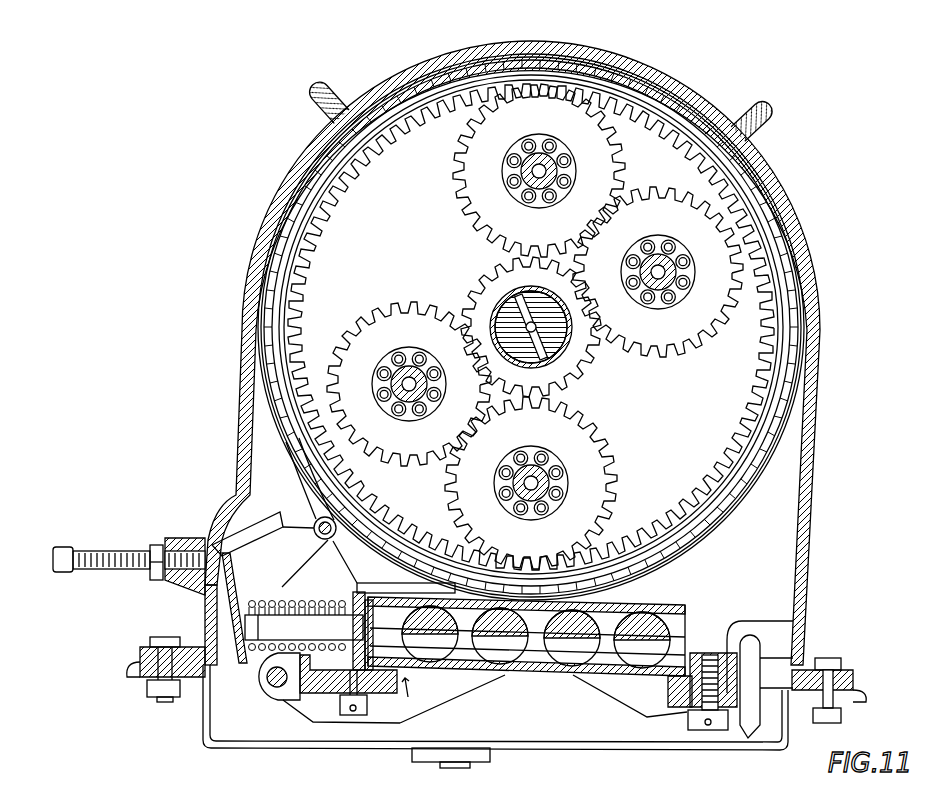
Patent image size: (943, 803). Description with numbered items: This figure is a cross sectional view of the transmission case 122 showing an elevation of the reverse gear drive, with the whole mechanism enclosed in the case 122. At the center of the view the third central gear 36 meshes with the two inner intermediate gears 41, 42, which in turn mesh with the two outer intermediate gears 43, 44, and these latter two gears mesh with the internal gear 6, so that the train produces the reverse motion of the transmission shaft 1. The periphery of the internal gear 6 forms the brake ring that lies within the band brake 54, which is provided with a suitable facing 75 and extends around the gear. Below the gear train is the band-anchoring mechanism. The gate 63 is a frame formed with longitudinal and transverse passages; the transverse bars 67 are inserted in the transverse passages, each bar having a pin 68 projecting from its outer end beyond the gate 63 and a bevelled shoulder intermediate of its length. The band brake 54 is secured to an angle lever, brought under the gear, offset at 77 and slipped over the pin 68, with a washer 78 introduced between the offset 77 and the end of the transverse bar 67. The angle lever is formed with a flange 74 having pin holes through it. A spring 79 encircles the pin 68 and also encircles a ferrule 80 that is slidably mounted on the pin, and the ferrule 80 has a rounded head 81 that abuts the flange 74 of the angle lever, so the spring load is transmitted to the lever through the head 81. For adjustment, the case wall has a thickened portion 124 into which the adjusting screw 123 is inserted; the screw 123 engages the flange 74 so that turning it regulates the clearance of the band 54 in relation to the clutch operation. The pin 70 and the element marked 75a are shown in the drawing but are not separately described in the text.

The transmission shaft 1 is at (570, 350).
The internal gear 6 is at (770, 265).
The third central gear 36 is at (495, 280).
The intermediate gear 41 is at (384, 313).
The intermediate gear 42 is at (666, 335).
The intermediate gear 43 is at (480, 195).
The intermediate gear 44 is at (595, 468).
The band brake 54 is at (268, 410).
The gate 63 is at (530, 676).
The transverse bar 67 is at (407, 687).
The pin 68 is at (273, 650).
The pin 70 is at (407, 657).
The flange 74 is at (232, 578).
The facing 75 is at (205, 620).
The band lining 75a is at (793, 348).
The offset 77 is at (357, 592).
The washer 78 is at (369, 600).
The spring 79 is at (308, 603).
The ferrule 80 is at (259, 607).
The rounded head 81 is at (204, 692).
The case 122 is at (243, 358).
The adjusting screw 123 is at (104, 548).
The thickened portion 124 is at (197, 538).